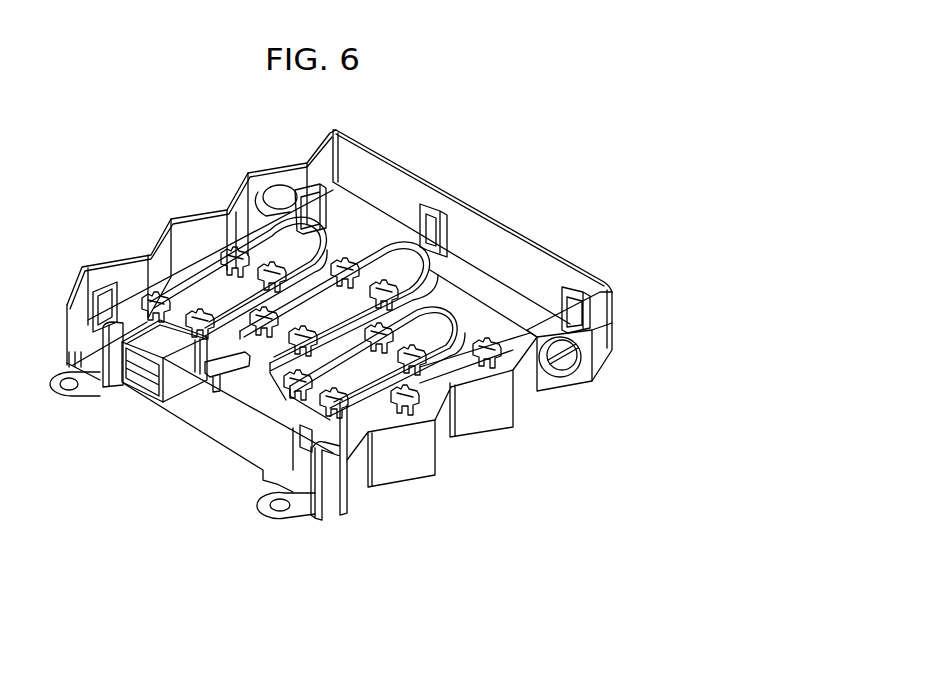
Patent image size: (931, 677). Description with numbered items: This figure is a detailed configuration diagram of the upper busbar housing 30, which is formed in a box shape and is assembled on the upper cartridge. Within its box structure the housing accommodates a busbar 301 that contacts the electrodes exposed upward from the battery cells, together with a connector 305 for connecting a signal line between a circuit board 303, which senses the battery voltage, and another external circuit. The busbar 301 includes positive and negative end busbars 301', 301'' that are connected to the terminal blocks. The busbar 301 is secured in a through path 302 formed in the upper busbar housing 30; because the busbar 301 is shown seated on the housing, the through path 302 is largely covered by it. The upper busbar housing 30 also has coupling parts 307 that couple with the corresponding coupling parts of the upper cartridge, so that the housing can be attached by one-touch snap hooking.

The upper busbar housing 30 is at (503, 199).
The busbar 301 is at (368, 280).
The positive end busbar 301' is at (91, 422).
The negative end busbar 301'' is at (307, 548).
The through path 302 is at (373, 433).
The circuit board 303 is at (217, 384).
The connector 305 is at (162, 332).
The coupling parts 307 is at (438, 226).